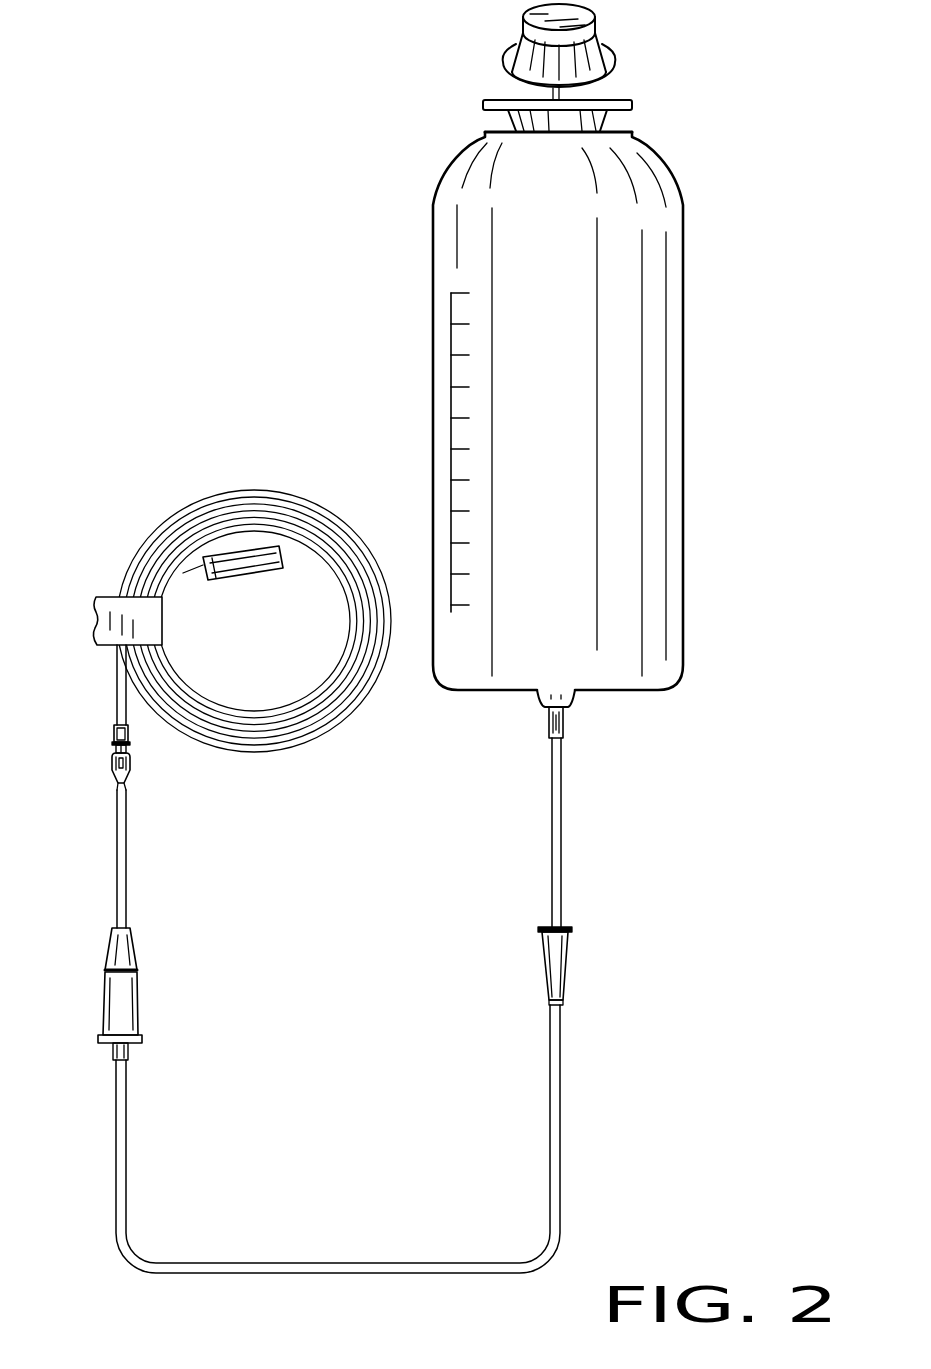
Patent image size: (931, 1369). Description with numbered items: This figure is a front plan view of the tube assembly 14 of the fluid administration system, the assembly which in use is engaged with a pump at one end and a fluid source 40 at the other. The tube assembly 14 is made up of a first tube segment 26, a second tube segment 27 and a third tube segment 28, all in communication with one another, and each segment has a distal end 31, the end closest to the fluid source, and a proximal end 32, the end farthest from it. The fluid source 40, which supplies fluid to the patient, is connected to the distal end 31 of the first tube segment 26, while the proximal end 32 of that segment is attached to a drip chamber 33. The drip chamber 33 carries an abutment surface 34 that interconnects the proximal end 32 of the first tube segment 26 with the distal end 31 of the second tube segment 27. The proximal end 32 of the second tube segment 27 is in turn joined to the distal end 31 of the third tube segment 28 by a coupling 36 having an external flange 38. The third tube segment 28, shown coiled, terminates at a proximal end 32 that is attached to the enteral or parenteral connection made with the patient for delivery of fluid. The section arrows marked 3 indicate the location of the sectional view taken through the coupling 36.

The fluid administration system 14 is at (742, 412).
The fluid container 40 is at (683, 538).
The tubing 26 is at (561, 841).
The tubing 27 is at (117, 835).
The coiled tubing 28 is at (162, 527).
The tubing segment 31 is at (117, 685).
The connector 32 is at (203, 565).
The connector body 33 is at (138, 1010).
The cap 34 is at (115, 927).
The valve 36 is at (117, 728).
The valve cuff 38 is at (117, 745).
The section line 3- 3 is at (131, 747).